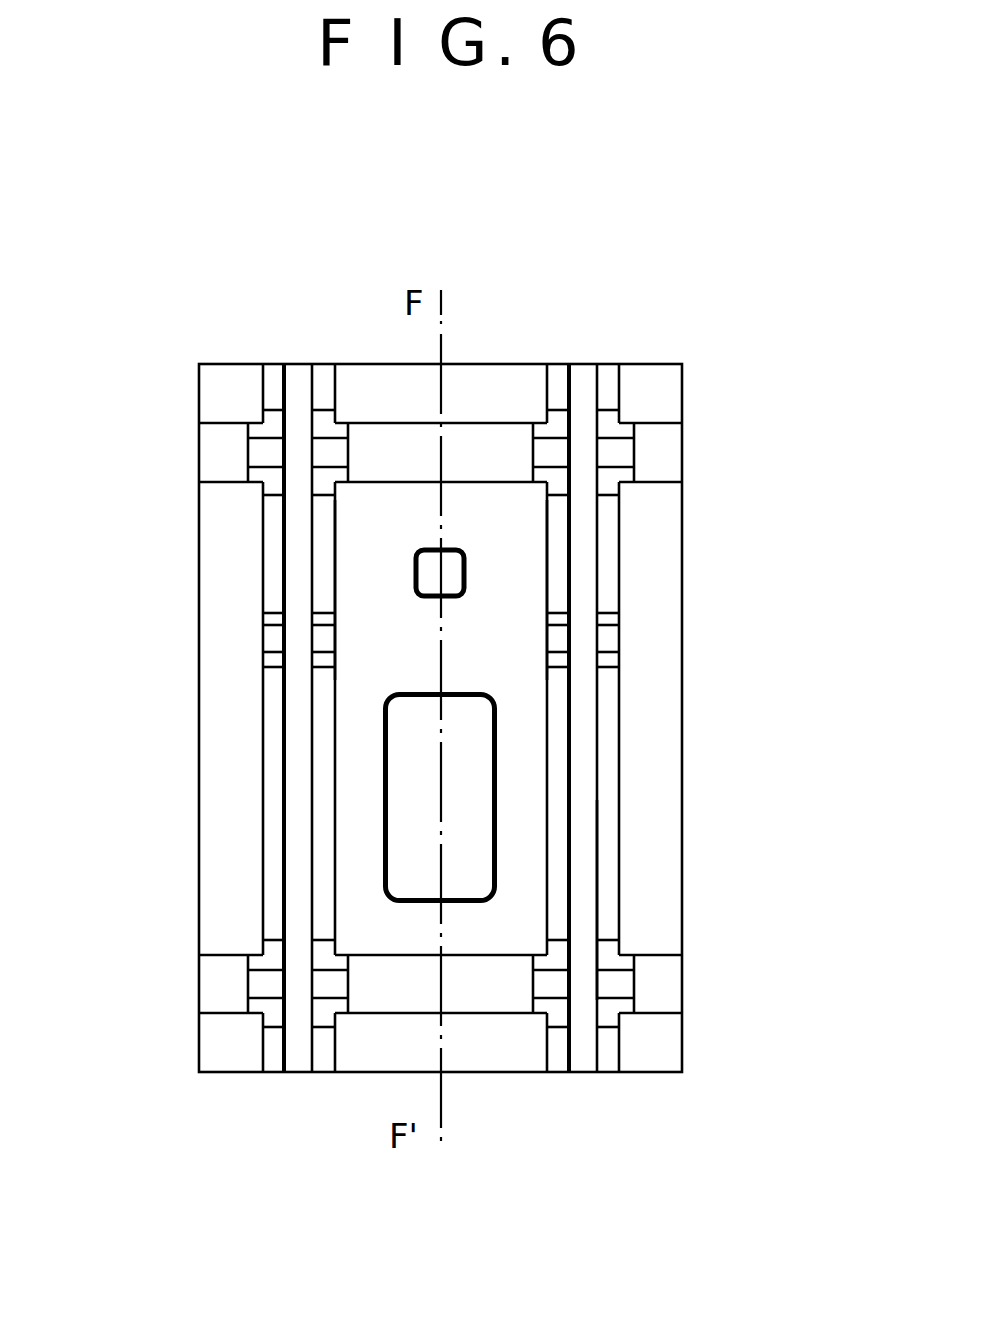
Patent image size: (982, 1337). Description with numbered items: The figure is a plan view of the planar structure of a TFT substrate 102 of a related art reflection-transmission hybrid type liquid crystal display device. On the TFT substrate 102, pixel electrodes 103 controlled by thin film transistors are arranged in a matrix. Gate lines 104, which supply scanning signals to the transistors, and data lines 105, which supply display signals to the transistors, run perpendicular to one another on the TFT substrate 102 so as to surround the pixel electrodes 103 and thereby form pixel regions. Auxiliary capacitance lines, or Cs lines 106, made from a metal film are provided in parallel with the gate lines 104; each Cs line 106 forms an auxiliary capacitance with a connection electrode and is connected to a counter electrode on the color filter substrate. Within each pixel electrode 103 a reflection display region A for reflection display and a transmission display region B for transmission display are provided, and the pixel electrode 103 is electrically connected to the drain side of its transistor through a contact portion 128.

The TFT substrate 102 is at (158, 431).
The pixel electrode 103 is at (760, 553).
The gate line 104 is at (267, 983).
The data line 105 is at (582, 893).
The auxiliary capacitance line (Cs line) 106 is at (272, 641).
The contact portion 128 is at (414, 570).
The reflection display region A is at (502, 598).
The transmission display region B is at (475, 737).